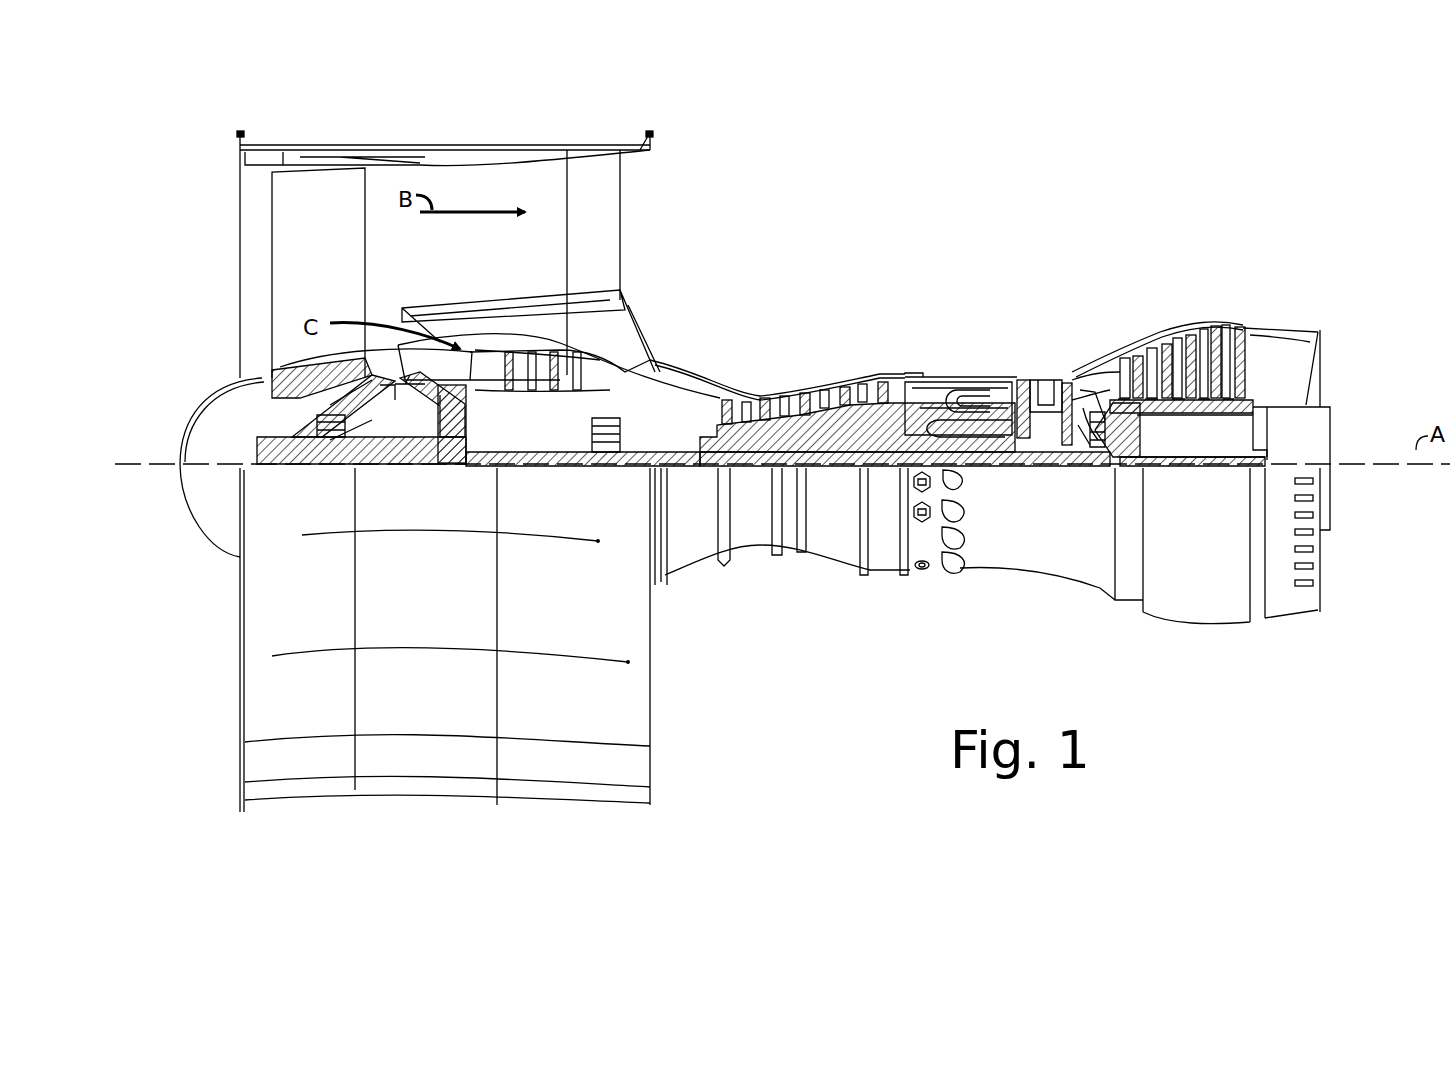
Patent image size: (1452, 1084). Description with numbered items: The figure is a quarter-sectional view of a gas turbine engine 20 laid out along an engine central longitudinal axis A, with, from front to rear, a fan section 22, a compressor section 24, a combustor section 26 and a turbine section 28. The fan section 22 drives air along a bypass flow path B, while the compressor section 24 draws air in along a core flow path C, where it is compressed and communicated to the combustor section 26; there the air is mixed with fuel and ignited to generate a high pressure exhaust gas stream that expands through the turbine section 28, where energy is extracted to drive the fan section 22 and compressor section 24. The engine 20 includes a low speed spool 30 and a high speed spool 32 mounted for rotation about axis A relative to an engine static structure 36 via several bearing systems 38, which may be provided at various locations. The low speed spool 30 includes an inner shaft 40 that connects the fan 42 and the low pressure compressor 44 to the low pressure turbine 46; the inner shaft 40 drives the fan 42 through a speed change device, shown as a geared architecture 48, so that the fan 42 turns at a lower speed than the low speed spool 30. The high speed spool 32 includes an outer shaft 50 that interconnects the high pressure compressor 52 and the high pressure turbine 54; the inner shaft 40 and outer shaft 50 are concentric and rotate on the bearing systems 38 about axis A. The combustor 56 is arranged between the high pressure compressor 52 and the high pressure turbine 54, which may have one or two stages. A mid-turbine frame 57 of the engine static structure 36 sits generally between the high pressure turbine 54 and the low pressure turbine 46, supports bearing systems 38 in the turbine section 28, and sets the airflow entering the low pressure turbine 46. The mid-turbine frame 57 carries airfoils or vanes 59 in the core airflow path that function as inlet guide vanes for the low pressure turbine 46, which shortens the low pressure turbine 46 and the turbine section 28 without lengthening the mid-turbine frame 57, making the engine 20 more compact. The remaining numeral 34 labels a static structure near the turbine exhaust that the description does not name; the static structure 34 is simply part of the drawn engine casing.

The gas turbine engine 20 is at (1105, 158).
The fan section 22 is at (472, 108).
The compressor section 24 is at (900, 254).
The combustor section 26 is at (1020, 254).
The turbine section 28 is at (1270, 254).
The low speed spool 30 is at (830, 480).
The high speed spool 32 is at (866, 435).
The engine static structure 34 is at (1190, 416).
The engine static structure 36 is at (885, 582).
The bearing systems 38 is at (325, 472).
The inner shaft 40 is at (680, 468).
The fan 42 is at (333, 252).
The low pressure compressor section 44 is at (580, 352).
The low pressure turbine section 46 is at (1190, 348).
The geared architecture 48 is at (452, 472).
The outer shaft 50 is at (970, 448).
The high pressure compressor section 52 is at (786, 435).
The high pressure turbine section 54 is at (1040, 378).
The combustor 56 is at (962, 396).
The mid-turbine frame 57 is at (1090, 366).
The airfoils/vanes 59 is at (1088, 388).